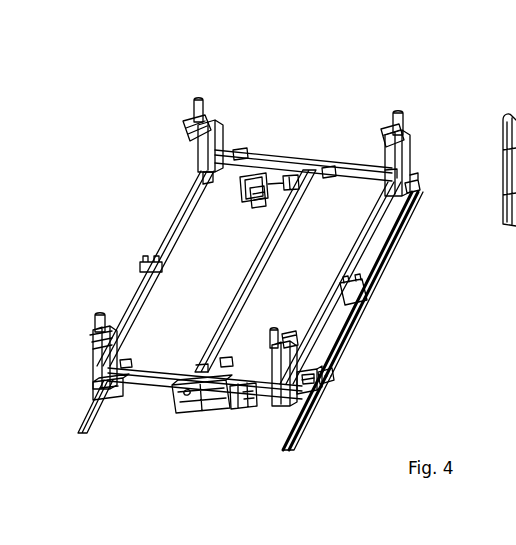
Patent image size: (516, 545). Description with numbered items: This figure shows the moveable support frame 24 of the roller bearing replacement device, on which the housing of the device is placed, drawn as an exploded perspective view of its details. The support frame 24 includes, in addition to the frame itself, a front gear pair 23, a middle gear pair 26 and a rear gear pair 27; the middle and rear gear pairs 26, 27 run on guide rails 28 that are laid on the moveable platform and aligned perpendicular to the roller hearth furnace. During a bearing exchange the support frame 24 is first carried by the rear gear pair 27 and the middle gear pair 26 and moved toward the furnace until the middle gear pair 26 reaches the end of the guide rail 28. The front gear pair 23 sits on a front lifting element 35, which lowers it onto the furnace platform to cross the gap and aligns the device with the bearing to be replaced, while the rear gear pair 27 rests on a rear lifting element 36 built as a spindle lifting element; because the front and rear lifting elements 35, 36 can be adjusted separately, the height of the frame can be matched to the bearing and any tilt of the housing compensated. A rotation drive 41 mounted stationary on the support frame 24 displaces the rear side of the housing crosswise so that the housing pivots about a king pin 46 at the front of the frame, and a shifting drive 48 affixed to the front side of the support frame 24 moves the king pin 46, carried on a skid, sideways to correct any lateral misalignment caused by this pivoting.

The support frame 24 is at (303, 94).
The rear lifting element 36 is at (212, 153).
The rear gear pair 27 is at (203, 178).
The rotation drive 41 is at (253, 207).
The front lifting element 35 is at (95, 365).
The front gear pair 23 is at (95, 389).
The middle gear pair 26 is at (321, 385).
The guide rails 28 is at (80, 434).
The king pin 46 is at (188, 412).
The shifting drive 48 is at (235, 412).